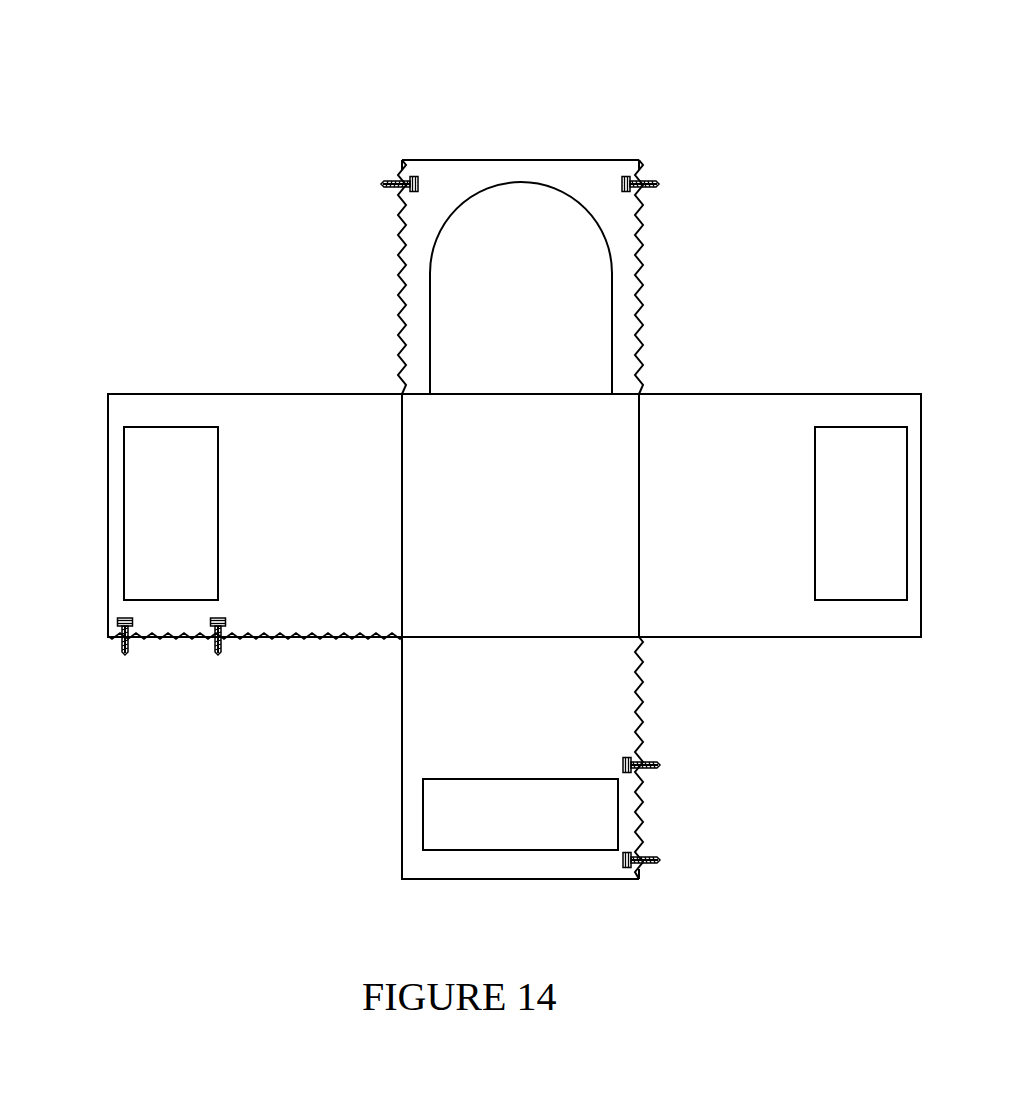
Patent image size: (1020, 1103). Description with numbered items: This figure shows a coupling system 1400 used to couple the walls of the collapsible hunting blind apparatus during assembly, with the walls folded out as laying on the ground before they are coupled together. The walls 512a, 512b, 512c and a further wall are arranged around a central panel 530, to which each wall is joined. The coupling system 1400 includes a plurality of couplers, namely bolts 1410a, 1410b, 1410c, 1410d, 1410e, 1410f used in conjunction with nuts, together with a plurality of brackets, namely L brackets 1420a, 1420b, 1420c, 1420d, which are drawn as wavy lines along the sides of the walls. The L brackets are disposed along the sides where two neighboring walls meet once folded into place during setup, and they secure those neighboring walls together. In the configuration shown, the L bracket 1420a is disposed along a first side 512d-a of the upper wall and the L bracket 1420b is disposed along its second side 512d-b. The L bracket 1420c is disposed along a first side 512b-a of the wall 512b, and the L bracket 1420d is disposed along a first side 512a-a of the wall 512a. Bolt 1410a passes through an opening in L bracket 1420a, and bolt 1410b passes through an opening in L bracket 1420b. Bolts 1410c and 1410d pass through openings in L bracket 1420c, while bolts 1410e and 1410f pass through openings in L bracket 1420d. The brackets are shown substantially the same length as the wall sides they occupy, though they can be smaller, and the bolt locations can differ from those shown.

The coupling system 1400 is at (238, 60).
The base panel 530 is at (622, 422).
The wall 512a is at (178, 412).
The first side of wall 512a 512a-a is at (322, 640).
The wall 512b is at (520, 170).
The first side of wall 512b 512b-a is at (642, 700).
The wall 512c is at (838, 410).
The first side of wall 512d 512d-a is at (400, 266).
The second side of wall 512d 512d-b is at (643, 282).
The bolt 1410a is at (382, 184).
The bolt 1410b is at (660, 184).
The bolt 1410c is at (660, 765).
The bolt 1410d is at (660, 860).
The bolt 1410e is at (125, 656).
The bolt 1410f is at (218, 656).
The L bracket 1420a is at (404, 160).
The L bracket 1420b is at (637, 160).
The L bracket 1420c is at (639, 880).
The L bracket 1420d is at (112, 637).